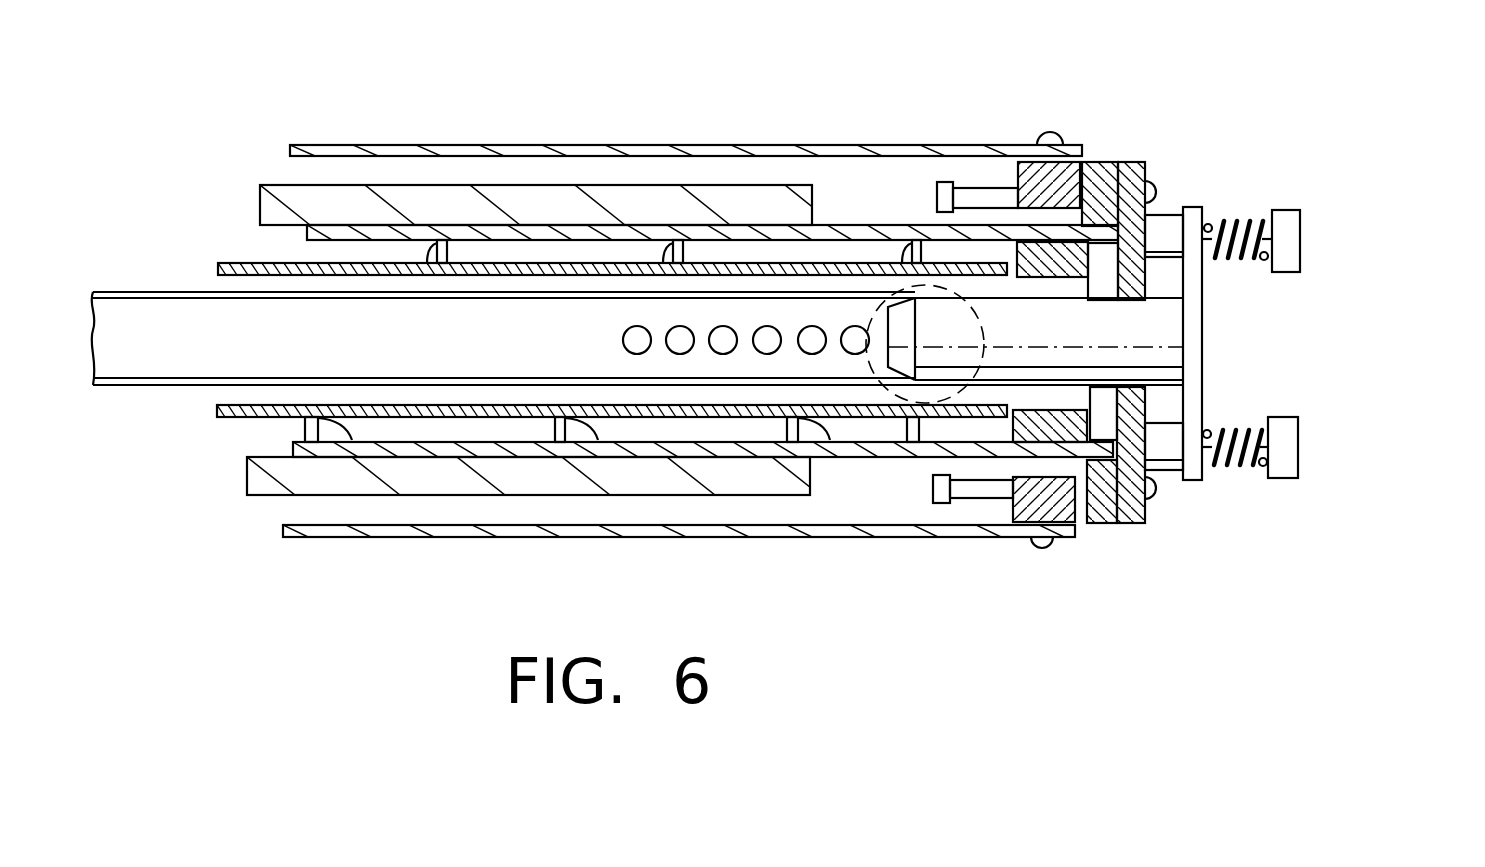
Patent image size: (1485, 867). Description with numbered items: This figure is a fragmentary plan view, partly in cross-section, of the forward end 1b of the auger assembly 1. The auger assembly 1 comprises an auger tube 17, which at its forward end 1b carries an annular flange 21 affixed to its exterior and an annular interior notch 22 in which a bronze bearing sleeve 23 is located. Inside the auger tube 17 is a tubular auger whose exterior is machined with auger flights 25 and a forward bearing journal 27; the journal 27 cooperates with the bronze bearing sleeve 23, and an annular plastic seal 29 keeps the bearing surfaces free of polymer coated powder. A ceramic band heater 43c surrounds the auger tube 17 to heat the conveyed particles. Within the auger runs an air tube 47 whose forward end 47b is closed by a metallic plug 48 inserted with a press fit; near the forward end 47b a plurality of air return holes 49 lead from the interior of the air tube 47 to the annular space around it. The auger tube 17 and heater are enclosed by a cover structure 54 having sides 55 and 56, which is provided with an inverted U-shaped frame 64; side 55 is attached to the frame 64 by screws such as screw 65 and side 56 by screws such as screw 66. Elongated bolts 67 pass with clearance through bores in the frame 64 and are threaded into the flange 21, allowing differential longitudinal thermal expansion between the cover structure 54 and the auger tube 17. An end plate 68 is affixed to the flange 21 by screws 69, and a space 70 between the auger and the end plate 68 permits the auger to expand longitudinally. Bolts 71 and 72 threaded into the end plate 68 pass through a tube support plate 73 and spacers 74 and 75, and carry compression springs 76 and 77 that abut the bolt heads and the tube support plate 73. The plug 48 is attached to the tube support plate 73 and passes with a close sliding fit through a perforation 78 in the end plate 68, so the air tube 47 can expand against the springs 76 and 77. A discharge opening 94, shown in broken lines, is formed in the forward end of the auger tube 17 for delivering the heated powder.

The auger assembly 1 is at (676, 329).
The forward end 1b is at (1157, 356).
The auger tube 17 is at (302, 232).
The annular flange 21 is at (1103, 172).
The annular interior notch 22 is at (1125, 218).
The bronze bearing sleeve 23 is at (220, 269).
The auger flights 25 is at (490, 250).
The forward bearing journal 27 is at (1043, 267).
The annular plastic seal 29 is at (993, 253).
The ceramic band heater 43c is at (280, 195).
The air tube 47 is at (148, 300).
The forward end of tube 47b is at (940, 392).
The plug 48 is at (1168, 323).
The air return holes 49 is at (637, 305).
The cover structure 54 is at (717, 145).
The side 55 is at (565, 148).
The side 56 is at (625, 538).
The inverted U-shaped frame 64 is at (1037, 173).
The screw 65 is at (1045, 138).
The screw 66 is at (1042, 550).
The elongated bolt 67 is at (937, 195).
The end plate 68 is at (1130, 168).
The screw 69 is at (1157, 197).
The space 70 is at (1193, 395).
The bolt 71 is at (1287, 230).
The bolt 72 is at (1285, 448).
The tube support plate 73 is at (1192, 397).
The spacer 74 is at (1172, 228).
The spacer 75 is at (1158, 447).
The compression spring 76 is at (1227, 218).
The compression spring 77 is at (1228, 465).
The perforation 78 is at (1133, 303).
The discharge opening 94 is at (900, 405).